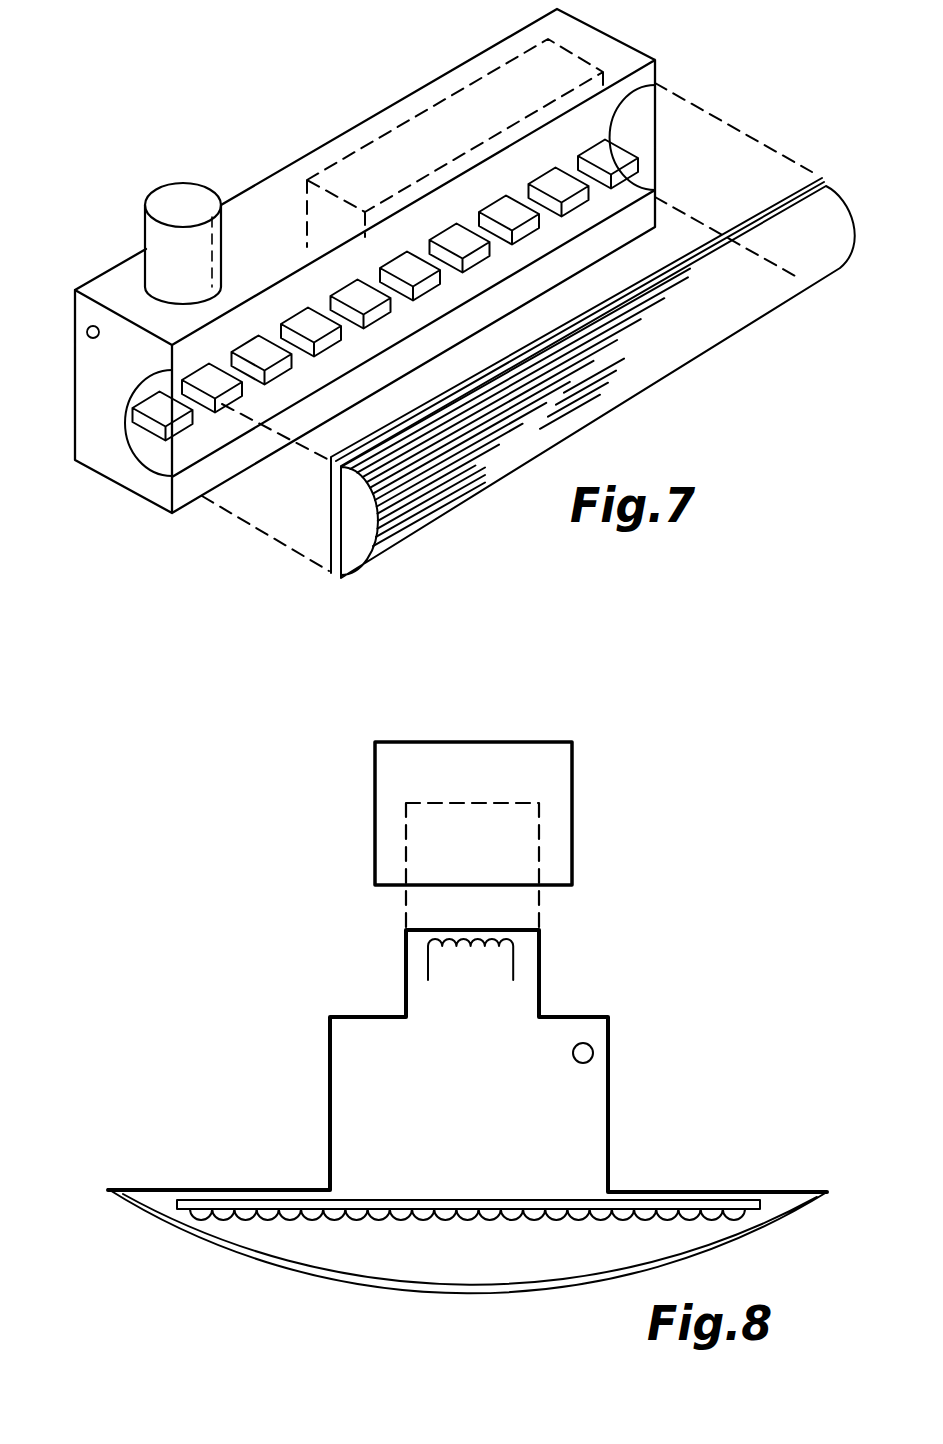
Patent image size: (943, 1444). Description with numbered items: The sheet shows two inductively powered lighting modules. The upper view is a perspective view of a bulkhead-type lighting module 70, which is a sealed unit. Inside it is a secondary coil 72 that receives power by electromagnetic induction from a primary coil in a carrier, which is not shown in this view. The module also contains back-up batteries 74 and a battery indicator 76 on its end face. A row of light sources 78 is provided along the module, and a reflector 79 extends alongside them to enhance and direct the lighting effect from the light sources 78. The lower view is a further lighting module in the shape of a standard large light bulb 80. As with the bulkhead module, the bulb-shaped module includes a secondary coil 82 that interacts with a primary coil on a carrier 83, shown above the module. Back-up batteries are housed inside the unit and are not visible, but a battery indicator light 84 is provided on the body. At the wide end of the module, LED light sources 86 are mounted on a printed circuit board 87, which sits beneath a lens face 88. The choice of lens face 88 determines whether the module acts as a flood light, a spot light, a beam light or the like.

In FIG. 7, the bulkhead-type lighting module 70 is at (98, 403).
In FIG. 7, the secondary coil 72 is at (177, 245).
In FIG. 7, the back-up batteries 74 is at (490, 80).
In FIG. 7, the battery indicator 76 is at (86, 333).
In FIG. 7, the light sources 78 is at (603, 148).
In FIG. 7, the reflector 79 is at (662, 337).
In FIG. 8, the light bulb shaped lighting module 80 is at (383, 1092).
In FIG. 8, the secondary coil 82 is at (513, 955).
In FIG. 8, the carrier 83 is at (527, 772).
In FIG. 8, the battery indicator light 84 is at (594, 1053).
In FIG. 8, the LED light sources 86 is at (481, 1216).
In FIG. 8, the printed circuit board 87 is at (527, 1207).
In FIG. 8, the lens face 88 is at (280, 1258).